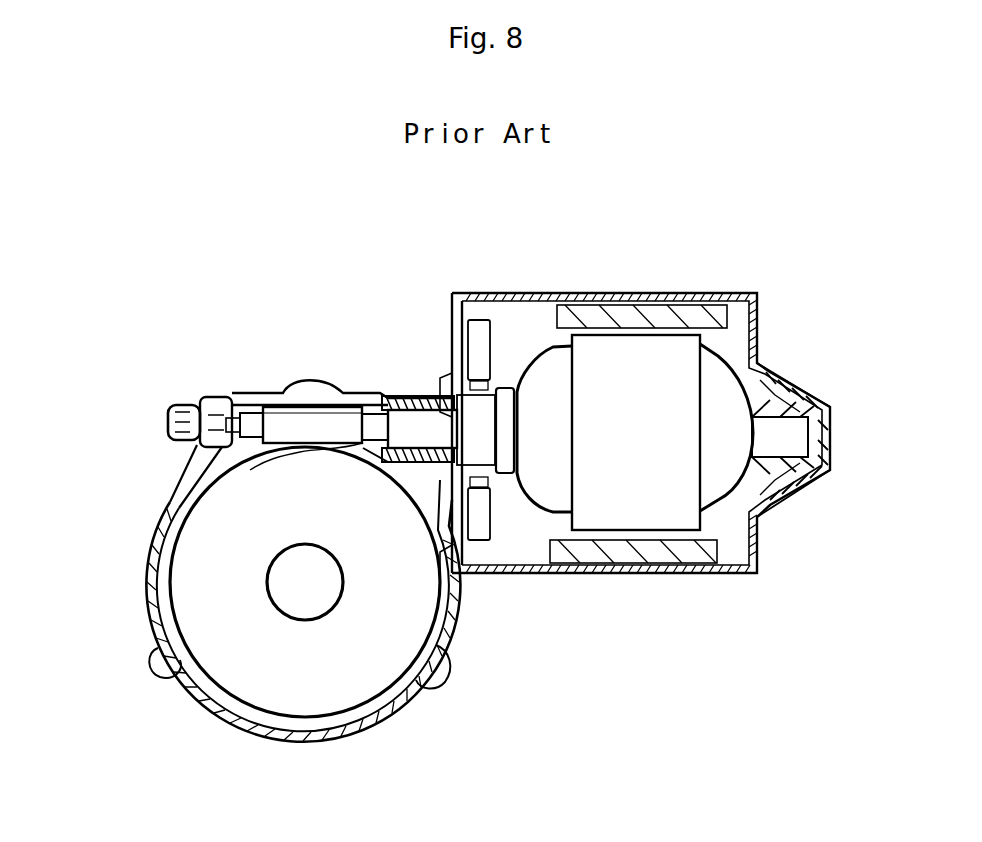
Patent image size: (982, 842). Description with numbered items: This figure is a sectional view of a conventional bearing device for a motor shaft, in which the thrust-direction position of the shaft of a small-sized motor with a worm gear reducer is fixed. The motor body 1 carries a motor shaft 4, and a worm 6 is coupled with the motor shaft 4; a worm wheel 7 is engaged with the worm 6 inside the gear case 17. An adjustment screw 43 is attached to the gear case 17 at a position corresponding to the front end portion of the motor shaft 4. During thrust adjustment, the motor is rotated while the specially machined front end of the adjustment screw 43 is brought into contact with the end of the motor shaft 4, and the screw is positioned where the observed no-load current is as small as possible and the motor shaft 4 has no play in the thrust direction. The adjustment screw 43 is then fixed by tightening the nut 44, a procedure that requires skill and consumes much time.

The motor body 1 is at (640, 277).
The motor shaft 4 is at (436, 430).
The worm 6 is at (277, 420).
The worm wheel 7 is at (350, 633).
The gear case 17 is at (168, 508).
The adjustment screw 43 is at (175, 412).
The nut 44 is at (193, 397).